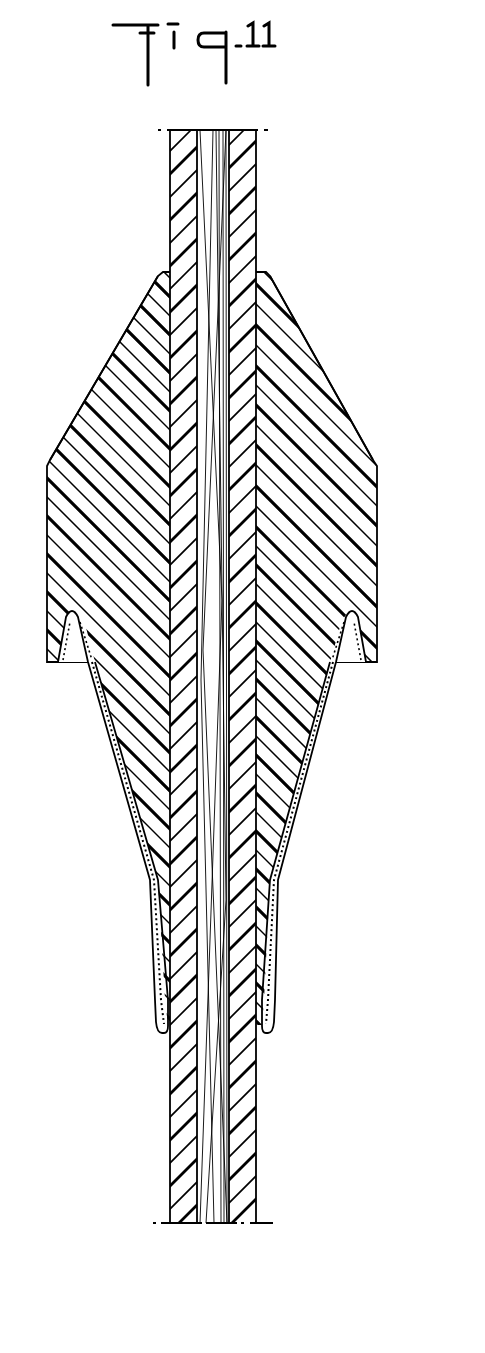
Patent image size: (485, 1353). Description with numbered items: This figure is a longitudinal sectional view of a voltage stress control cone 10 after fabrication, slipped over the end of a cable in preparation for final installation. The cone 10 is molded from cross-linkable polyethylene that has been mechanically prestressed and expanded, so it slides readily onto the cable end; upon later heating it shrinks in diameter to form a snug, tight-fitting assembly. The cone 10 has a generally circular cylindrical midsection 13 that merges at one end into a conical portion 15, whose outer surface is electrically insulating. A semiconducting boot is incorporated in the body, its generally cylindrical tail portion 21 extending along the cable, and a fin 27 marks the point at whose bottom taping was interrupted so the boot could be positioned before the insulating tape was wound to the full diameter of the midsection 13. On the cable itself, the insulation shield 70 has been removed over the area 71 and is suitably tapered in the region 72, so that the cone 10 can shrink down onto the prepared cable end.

The voltage stress control cone 10 is at (382, 442).
The cylindrical midsection 13 is at (377, 543).
The conical portion 15 is at (320, 362).
The tail portion 21 is at (278, 912).
The fin 27 is at (377, 638).
The insulation shield 70 is at (258, 1115).
The area 71 is at (247, 233).
The region 72 is at (263, 978).